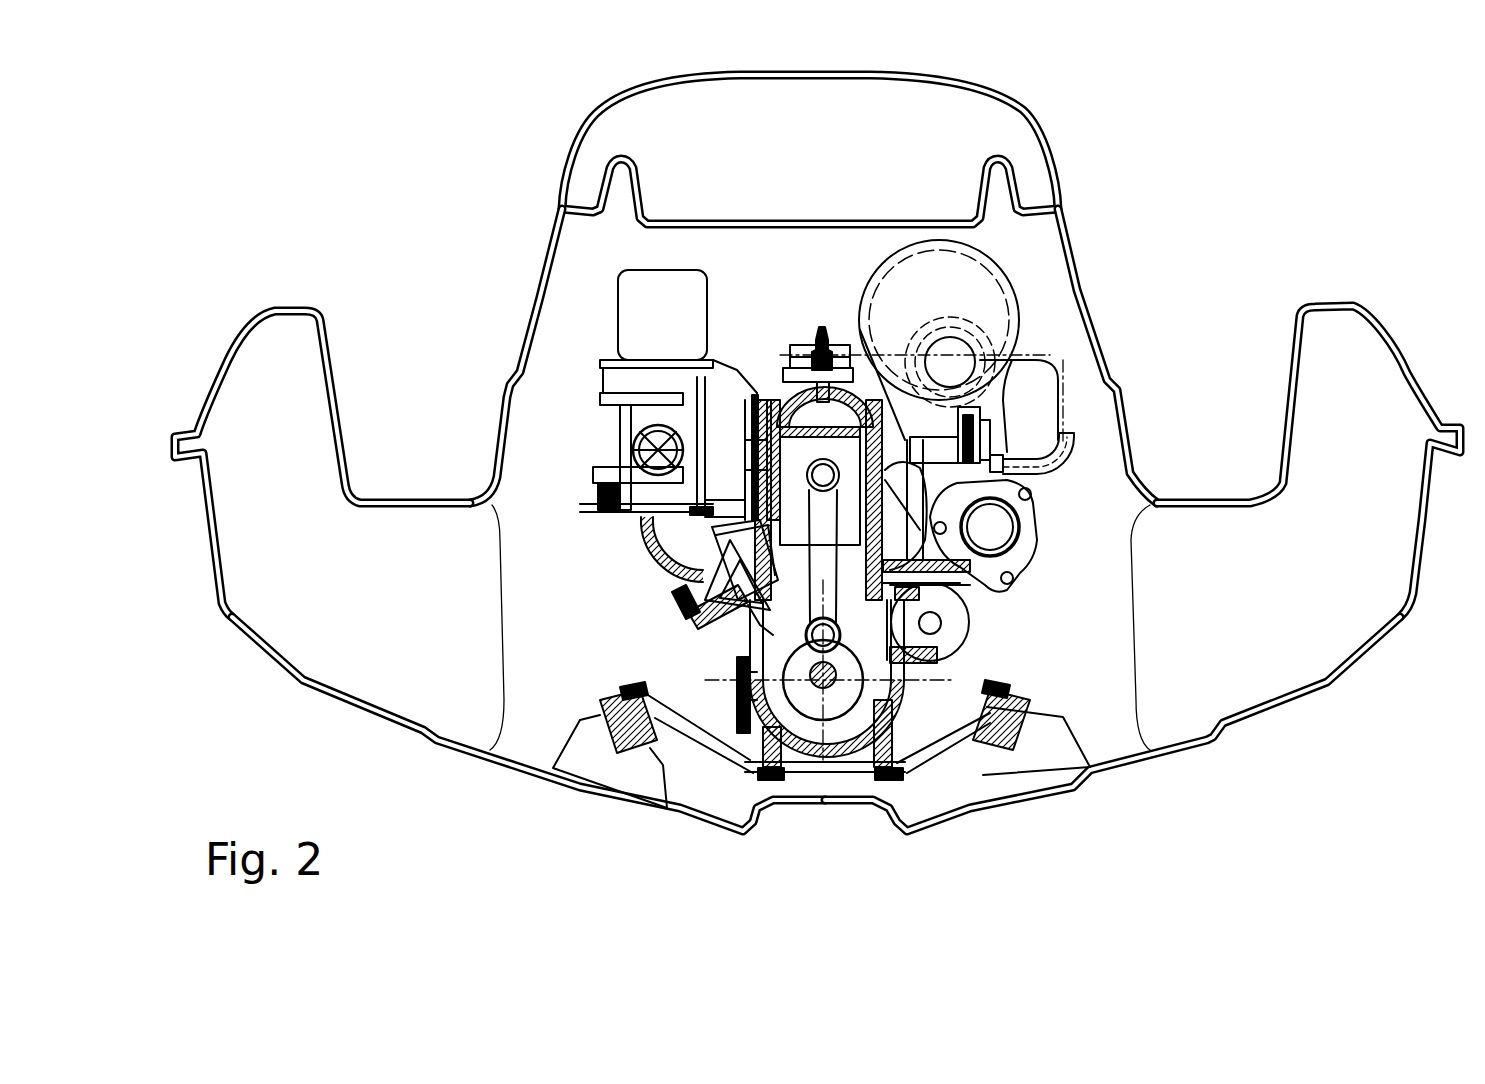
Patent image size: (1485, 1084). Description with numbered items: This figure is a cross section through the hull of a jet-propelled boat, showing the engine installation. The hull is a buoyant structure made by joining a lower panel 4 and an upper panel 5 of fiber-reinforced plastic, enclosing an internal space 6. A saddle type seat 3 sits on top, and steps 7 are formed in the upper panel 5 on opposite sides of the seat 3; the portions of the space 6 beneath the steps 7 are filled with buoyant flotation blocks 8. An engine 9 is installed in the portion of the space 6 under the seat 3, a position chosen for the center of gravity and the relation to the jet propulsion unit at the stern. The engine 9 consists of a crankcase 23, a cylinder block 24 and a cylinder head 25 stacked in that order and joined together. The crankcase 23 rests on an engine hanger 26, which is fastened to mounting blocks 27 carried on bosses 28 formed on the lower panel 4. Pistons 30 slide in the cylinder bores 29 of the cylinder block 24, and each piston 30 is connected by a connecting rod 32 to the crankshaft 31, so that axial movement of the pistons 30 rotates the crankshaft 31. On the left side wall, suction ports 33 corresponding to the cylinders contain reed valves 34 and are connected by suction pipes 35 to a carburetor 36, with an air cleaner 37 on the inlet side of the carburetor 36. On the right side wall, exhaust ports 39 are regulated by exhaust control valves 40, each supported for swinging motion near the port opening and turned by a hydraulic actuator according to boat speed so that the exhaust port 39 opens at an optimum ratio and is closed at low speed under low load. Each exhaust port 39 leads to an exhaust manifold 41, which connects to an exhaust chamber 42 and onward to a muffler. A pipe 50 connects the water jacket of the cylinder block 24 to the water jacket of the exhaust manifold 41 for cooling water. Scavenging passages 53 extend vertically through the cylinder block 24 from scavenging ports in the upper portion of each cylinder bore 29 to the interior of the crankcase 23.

The saddle type seat 3 is at (988, 82).
The lower panel 4 is at (1167, 748).
The upper panel 5 is at (1085, 285).
The internal space 6 is at (770, 268).
The steps 7 is at (1212, 502).
The buoyant flotation blocks 8 is at (1130, 632).
The engine 9 is at (765, 332).
The crankcase 23 is at (895, 683).
The cylinder block 24 is at (752, 508).
The cylinder head 25 is at (905, 437).
The engine hanger 26 is at (703, 745).
The mounting blocks 27 is at (600, 712).
The bosses 28 is at (540, 766).
The cylinder bores 29 is at (760, 466).
The pistons 30 is at (752, 418).
The crankshaft 31 is at (738, 693).
The connecting rod 32 is at (710, 530).
The suction ports 33 is at (745, 627).
The reed valves 34 is at (690, 617).
The suction pipes 35 is at (648, 556).
The carburetor 36 is at (622, 448).
The air cleaner 37 is at (618, 272).
The exhaust ports 39 is at (890, 516).
The exhaust control valve 40 is at (915, 445).
The exhaust manifold 41 is at (1038, 530).
The exhaust chamber 42 is at (1030, 320).
The pipe 50 is at (1060, 460).
The scavenging passages 53 is at (672, 597).